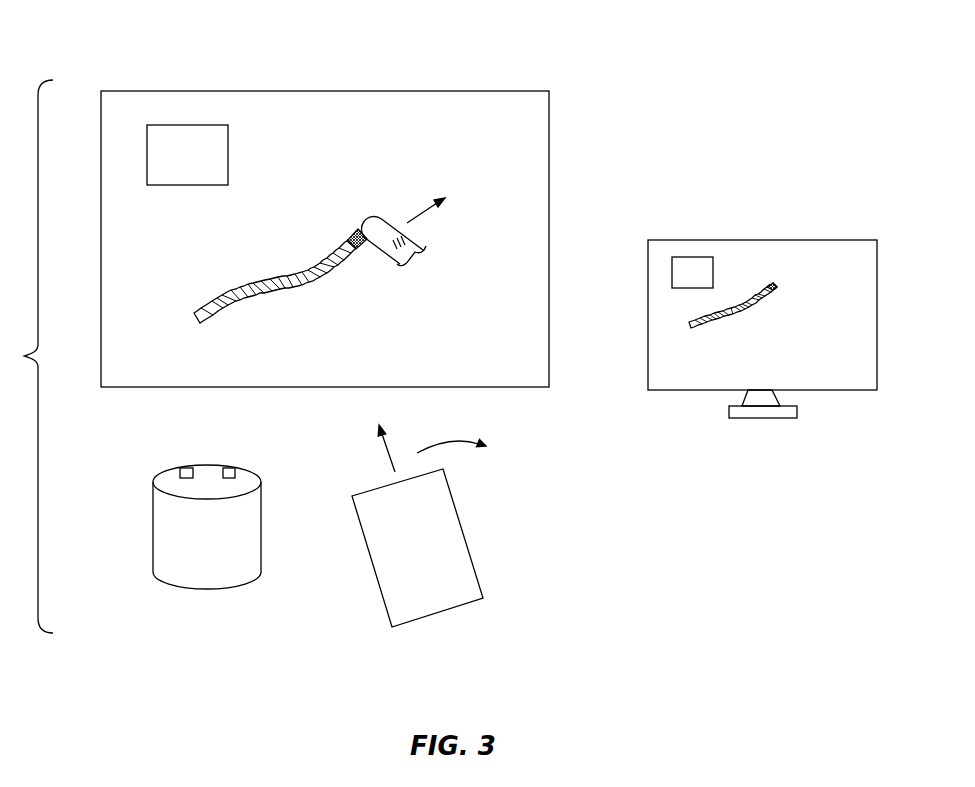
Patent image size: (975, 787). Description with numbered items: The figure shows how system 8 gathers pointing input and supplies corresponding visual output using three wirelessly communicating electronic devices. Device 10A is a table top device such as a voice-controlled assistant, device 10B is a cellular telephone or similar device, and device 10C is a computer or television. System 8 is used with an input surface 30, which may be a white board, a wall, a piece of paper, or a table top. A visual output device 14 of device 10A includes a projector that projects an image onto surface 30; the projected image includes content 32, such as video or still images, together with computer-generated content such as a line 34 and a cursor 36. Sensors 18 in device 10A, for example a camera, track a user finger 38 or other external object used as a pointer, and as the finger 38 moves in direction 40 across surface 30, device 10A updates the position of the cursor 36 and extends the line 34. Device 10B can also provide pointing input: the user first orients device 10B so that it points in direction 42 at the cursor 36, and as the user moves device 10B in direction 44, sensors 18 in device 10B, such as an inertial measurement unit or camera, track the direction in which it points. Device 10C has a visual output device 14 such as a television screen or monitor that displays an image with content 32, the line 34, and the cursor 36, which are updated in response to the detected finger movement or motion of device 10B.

The system 8 is at (30, 356).
The surface 30 is at (422, 90).
The content 32 is at (229, 151).
The line 34 is at (282, 276).
The cursor 36 is at (355, 233).
The user finger 38 is at (386, 218).
The direction 40 is at (425, 215).
The electronic device 10A is at (211, 576).
The electronic device 10B is at (432, 608).
The electronic device 10C is at (848, 391).
The visual output device 14 is at (230, 467).
The sensors 18 is at (186, 467).
The direction 42 is at (388, 447).
The direction 44 is at (463, 449).